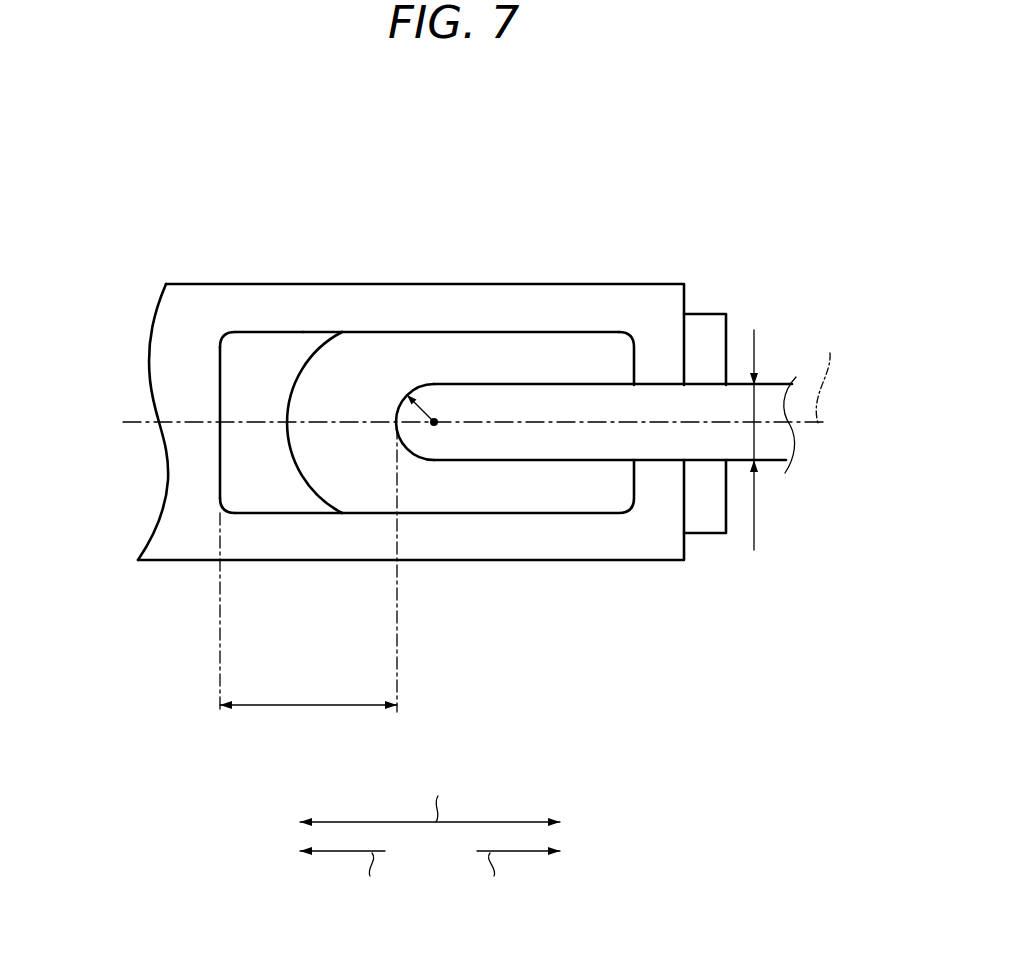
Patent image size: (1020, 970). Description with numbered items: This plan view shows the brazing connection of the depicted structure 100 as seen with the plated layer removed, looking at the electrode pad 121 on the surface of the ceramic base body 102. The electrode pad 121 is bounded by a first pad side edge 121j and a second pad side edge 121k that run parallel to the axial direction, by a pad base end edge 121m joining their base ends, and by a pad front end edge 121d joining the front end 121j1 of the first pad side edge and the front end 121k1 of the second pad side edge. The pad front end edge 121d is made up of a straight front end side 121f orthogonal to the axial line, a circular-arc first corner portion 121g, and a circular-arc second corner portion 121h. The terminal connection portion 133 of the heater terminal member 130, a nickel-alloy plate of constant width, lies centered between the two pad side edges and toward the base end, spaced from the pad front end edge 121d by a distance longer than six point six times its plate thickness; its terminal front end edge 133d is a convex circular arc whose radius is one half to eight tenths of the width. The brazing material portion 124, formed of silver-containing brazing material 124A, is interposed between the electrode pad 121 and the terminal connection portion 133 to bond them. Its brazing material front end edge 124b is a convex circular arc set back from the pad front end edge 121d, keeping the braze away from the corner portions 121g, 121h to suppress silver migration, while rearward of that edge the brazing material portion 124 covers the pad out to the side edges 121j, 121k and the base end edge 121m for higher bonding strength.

The lens unit / optical assembly 100 is at (613, 173).
The ceramic base body 102 is at (478, 533).
The electrode pad 121 is at (267, 343).
The pad front end edge 121d is at (143, 421).
The first corner portion 121g is at (220, 333).
The front end side 121f is at (220, 422).
The second corner portion 121h is at (222, 510).
The front end of the first pad side edge 121j1 is at (248, 337).
The first pad side edge 121j is at (303, 331).
The front end of the second pad side edge 121k1 is at (240, 513).
The second pad side edge 121k is at (283, 513).
The pad base end edge 121m is at (636, 372).
The brazing material portion 124 is at (498, 358).
The brazing material 124A is at (480, 274).
The brazing material front end edge 124b is at (293, 387).
The terminal connection portion 133 is at (560, 433).
The heater terminal member 130 is at (615, 517).
The terminal front end edge 133d is at (397, 422).